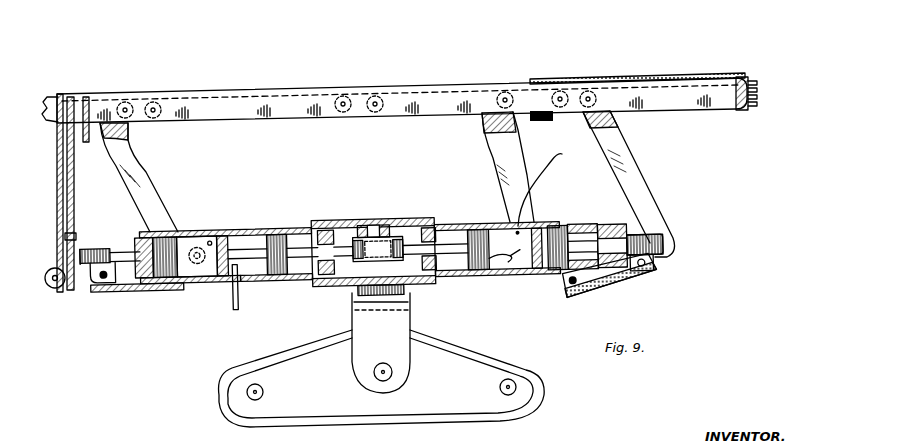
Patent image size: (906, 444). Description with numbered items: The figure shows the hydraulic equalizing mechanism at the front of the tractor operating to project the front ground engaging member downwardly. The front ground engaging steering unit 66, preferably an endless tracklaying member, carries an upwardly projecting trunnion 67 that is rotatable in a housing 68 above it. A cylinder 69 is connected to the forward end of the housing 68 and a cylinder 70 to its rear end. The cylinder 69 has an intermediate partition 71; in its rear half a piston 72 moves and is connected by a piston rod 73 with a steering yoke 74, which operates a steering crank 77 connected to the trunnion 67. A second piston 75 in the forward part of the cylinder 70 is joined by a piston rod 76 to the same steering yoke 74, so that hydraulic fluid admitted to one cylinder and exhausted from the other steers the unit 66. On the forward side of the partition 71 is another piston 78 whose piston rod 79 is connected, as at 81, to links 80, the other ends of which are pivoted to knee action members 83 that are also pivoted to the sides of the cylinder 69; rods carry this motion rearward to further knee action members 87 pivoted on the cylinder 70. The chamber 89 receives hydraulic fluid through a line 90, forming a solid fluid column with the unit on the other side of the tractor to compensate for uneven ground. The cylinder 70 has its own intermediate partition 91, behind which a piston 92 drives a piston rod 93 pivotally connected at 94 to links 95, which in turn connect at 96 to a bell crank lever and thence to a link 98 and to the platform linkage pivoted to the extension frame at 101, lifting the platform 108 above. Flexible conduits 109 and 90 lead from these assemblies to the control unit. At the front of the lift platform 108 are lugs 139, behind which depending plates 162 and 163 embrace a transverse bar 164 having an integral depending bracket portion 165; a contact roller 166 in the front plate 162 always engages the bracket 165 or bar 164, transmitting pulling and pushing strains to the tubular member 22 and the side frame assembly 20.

The side frame assembly 20 is at (741, 78).
The tubular member 22 is at (641, 77).
The ground engaging steering unit 66 is at (535, 362).
The trunnion 67 is at (404, 297).
The housing 68 is at (336, 227).
The cylinder 69 is at (230, 239).
The cylinder 70 is at (478, 239).
The intermediate partition 71 is at (212, 286).
The piston 72 is at (278, 239).
The piston rod 73 is at (300, 287).
The steering yoke 74 is at (363, 232).
The second piston 75 is at (500, 285).
The piston rod 76 is at (442, 253).
The steering crank 77 is at (396, 233).
The piston 78 is at (162, 239).
The piston rod 79 is at (112, 250).
The link 80 is at (108, 292).
The connection 81 is at (106, 292).
The knee action member 83 is at (138, 174).
The knee action member 87 is at (491, 166).
The chamber 89 is at (193, 239).
The line 90 is at (748, 78).
The intermediate partition 91 is at (538, 286).
The piston 92 is at (580, 236).
The piston rod 93 is at (609, 237).
The pivotal connection 94 is at (653, 274).
The link 95 is at (612, 300).
The pivotal connection 96 is at (570, 298).
The link 98 is at (628, 166).
The pivot 101 is at (505, 92).
The lifting platform 108 is at (207, 92).
The conduit 109 is at (758, 84).
The projecting lug 139 is at (50, 96).
The depending plate 162 is at (63, 186).
The depending plate 163 is at (87, 99).
The transverse bar 164 is at (70, 97).
The depending bracket portion 165 is at (76, 235).
The contact roller 166 is at (55, 289).